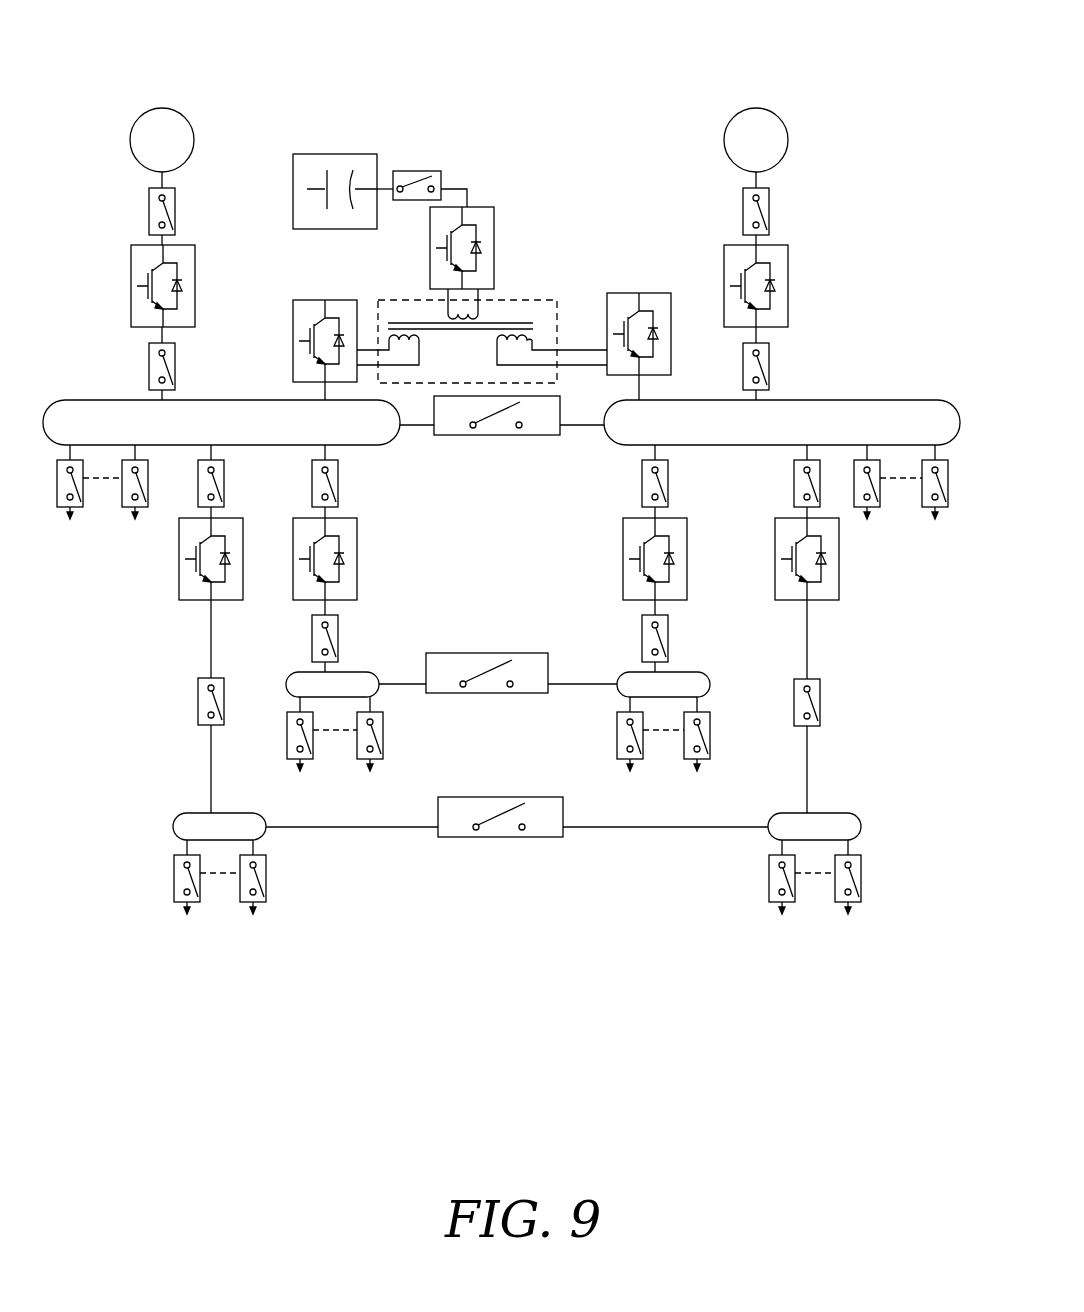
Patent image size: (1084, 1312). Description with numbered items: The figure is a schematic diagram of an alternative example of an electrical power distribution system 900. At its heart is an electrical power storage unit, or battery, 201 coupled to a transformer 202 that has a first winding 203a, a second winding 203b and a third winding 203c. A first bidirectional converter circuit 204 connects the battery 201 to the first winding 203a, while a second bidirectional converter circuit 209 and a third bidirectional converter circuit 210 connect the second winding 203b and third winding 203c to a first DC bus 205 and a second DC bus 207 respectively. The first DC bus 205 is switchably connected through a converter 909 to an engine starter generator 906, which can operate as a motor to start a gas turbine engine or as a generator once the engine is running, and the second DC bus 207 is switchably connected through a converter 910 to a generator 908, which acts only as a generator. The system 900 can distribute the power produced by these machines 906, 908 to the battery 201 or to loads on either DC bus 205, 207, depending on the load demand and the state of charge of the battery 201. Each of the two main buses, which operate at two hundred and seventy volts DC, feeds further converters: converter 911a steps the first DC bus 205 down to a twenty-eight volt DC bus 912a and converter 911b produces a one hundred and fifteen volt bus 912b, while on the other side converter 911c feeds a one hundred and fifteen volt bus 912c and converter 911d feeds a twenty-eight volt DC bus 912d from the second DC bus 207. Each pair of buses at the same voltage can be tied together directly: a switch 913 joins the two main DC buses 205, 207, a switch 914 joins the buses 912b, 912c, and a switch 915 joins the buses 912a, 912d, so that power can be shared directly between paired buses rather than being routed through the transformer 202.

The electrical power distribution system 900 is at (848, 166).
The engine starter generator 906 is at (130, 140).
The generator 908 is at (788, 140).
The converter 909 is at (131, 278).
The converter 910 is at (788, 276).
The electrical power storage unit 201 is at (293, 186).
The first bidirectional converter circuit 204 is at (480, 207).
The transformer 202 is at (491, 308).
The first winding 203a is at (480, 323).
The second winding 203b is at (425, 332).
The third winding 203c is at (532, 326).
The second bidirectional converter circuit 209 is at (293, 344).
The third bidirectional converter circuit 210 is at (664, 293).
The first DC bus 205 is at (368, 447).
The second DC bus 207 is at (613, 445).
The switch 913 is at (490, 437).
The converter 911a is at (179, 576).
The converter 911b is at (357, 555).
The converter 911c is at (623, 556).
The converter 911d is at (839, 557).
The DC bus 912a is at (173, 826).
The DC bus 912b is at (365, 672).
The DC bus 912c is at (630, 672).
The DC bus 912d is at (840, 813).
The switch 914 is at (485, 653).
The switch 915 is at (490, 797).